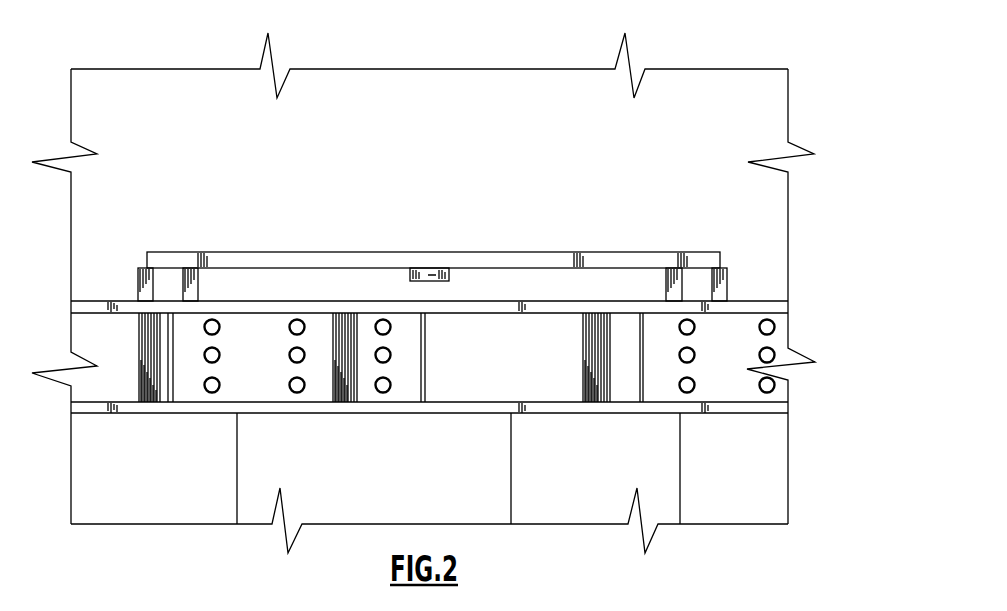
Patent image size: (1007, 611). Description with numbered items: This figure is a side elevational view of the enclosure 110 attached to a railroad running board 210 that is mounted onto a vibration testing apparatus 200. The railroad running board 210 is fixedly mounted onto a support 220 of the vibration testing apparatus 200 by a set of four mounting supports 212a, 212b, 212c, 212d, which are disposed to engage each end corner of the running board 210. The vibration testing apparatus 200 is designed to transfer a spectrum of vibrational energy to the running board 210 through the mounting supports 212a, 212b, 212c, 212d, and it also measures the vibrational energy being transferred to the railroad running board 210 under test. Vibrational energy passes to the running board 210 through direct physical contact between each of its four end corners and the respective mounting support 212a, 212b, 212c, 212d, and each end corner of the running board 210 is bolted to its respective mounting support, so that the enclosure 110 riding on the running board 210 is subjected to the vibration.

The vibration testing apparatus 200 is at (730, 44).
The enclosure 110 is at (436, 275).
The railroad running board 210 is at (668, 260).
The mounting support 212a is at (146, 280).
The mounting support 212b is at (720, 278).
The mounting support 212c is at (198, 278).
The mounting support 212d is at (667, 278).
The support 220 is at (548, 372).